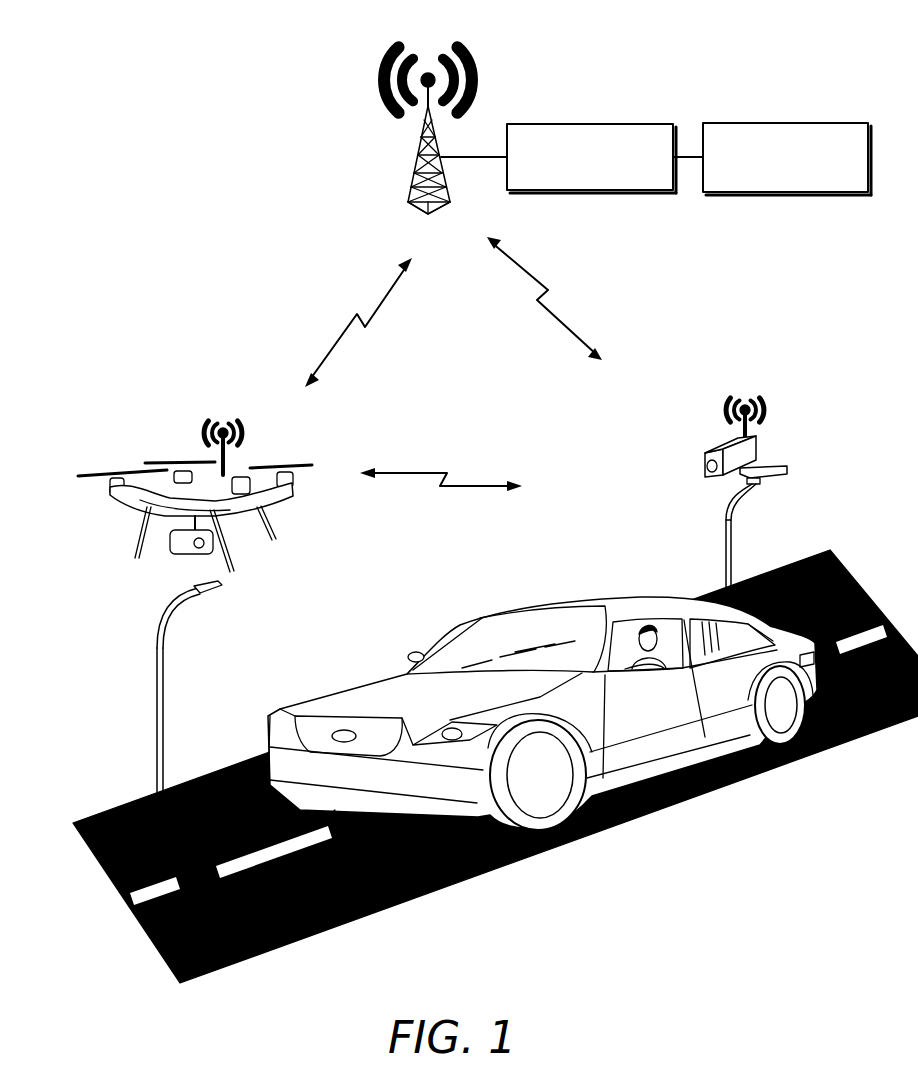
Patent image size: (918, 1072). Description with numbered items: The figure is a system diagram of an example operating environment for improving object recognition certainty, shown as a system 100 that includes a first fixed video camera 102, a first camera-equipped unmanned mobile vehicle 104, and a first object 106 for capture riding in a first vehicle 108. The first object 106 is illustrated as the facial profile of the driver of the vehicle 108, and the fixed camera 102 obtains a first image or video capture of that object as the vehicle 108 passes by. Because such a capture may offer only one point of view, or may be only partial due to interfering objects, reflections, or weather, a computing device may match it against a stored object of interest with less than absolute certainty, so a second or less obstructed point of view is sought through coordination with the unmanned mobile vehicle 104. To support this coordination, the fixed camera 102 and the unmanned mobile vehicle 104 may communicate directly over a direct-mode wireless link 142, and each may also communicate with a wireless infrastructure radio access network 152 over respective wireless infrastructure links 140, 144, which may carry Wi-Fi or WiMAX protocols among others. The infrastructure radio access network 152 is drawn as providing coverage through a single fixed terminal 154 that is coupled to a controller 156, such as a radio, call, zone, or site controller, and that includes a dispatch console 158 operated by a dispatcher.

The system 100 is at (133, 39).
The first fixed video camera 102 is at (758, 468).
The first camera-equipped unmanned mobile vehicle 104 is at (112, 490).
The first object for capture 106 is at (652, 663).
The first vehicle 108 is at (310, 700).
The wireless infrastructure link 140 is at (381, 297).
The direct-mode wireless link 142 is at (421, 473).
The wireless infrastructure link 144 is at (530, 275).
The wireless infrastructure radio access network (RAN) 152 is at (348, 90).
The fixed terminal 154 is at (420, 171).
The controller 156 is at (600, 124).
The dispatch console 158 is at (785, 123).